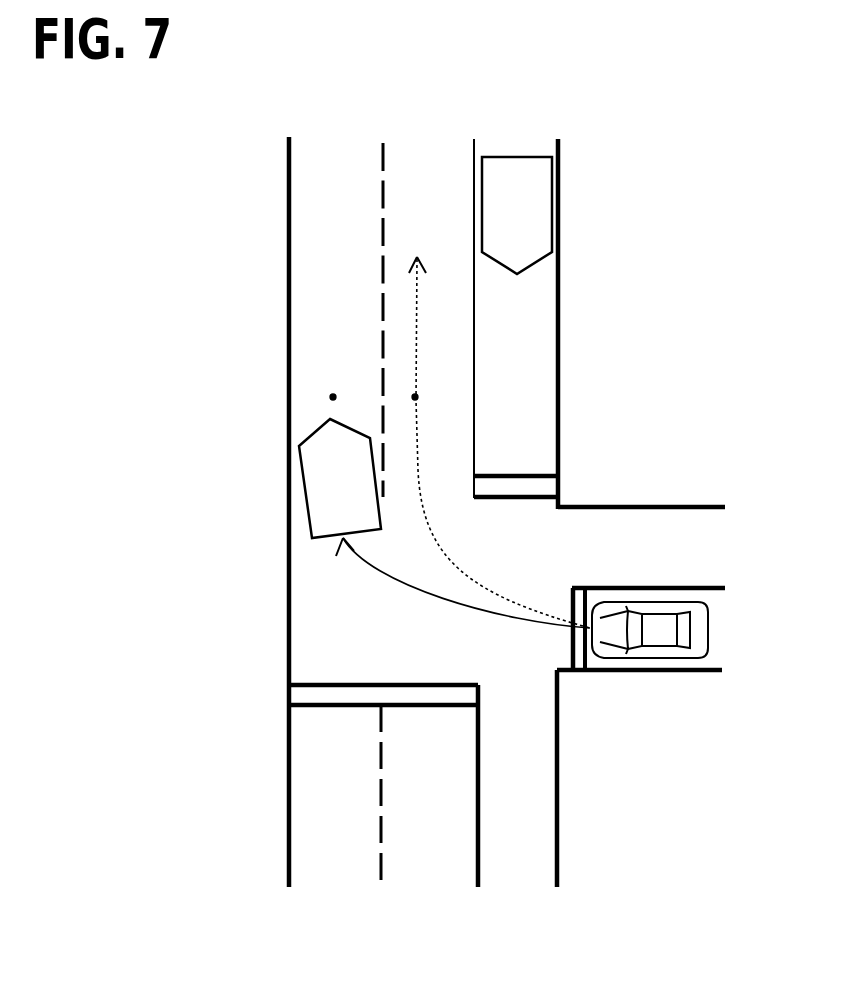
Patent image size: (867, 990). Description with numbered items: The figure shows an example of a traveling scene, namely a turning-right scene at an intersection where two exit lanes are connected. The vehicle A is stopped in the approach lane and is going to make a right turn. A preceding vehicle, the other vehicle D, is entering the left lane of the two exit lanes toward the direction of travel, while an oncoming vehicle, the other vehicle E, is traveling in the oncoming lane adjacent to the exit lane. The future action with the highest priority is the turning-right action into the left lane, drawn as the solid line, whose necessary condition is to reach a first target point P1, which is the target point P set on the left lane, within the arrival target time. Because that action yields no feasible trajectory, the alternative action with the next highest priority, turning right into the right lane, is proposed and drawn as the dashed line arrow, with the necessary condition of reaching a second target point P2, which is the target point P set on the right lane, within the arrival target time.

The other vehicle E is at (560, 202).
The other vehicle D is at (304, 503).
The target point P is at (414, 399).
The first target point P1 is at (330, 397).
The second target point P2 is at (418, 397).
The vehicle A is at (710, 632).